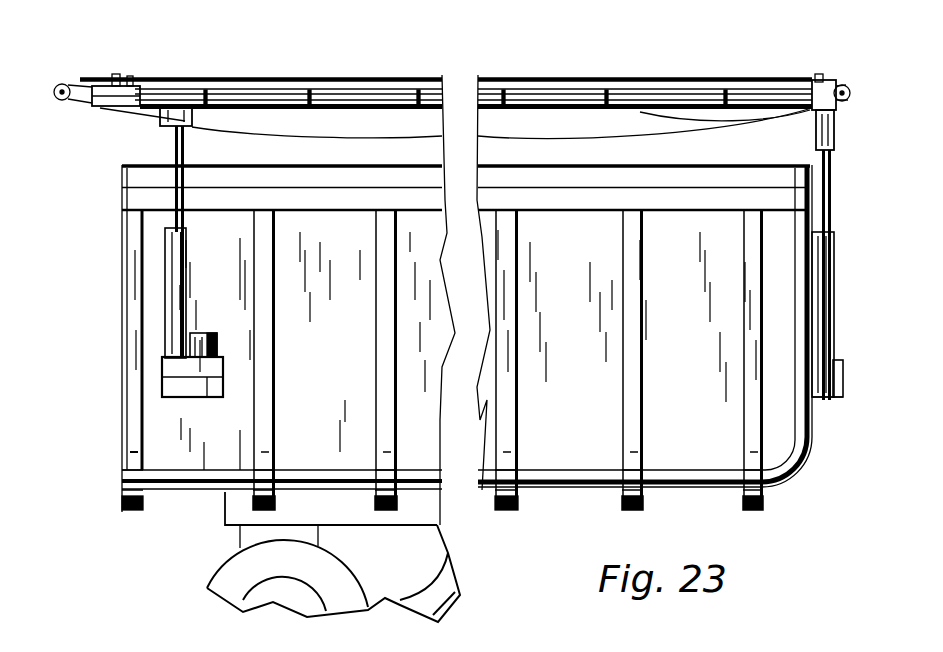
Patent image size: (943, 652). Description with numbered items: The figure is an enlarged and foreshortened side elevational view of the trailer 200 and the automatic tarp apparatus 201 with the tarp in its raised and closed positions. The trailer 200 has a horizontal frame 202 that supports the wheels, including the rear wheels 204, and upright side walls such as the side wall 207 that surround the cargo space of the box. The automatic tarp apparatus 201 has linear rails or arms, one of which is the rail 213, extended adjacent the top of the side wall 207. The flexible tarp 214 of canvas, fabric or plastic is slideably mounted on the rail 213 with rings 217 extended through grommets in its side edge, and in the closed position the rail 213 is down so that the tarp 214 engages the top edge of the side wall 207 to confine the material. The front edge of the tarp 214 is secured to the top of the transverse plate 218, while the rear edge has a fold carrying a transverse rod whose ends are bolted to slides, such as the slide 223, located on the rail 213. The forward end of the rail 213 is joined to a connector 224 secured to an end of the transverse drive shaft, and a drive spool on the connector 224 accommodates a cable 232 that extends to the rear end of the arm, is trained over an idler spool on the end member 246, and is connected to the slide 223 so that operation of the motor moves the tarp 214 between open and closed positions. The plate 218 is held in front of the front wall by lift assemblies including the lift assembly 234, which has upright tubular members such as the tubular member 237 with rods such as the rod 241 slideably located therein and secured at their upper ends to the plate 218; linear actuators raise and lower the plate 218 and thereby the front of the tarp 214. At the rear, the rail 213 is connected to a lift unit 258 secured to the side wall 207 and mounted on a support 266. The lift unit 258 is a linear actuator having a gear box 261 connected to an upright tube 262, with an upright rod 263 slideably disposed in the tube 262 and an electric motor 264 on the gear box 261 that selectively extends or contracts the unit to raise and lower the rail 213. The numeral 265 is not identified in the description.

The trailer 200 is at (119, 356).
The automatic tarp apparatus 201 is at (745, 75).
The horizontal frame 202 is at (237, 508).
The rear wheels 204 is at (230, 587).
The side wall 207 is at (538, 462).
The rail 213 is at (340, 97).
The tarp 214 is at (582, 122).
The rings 217 is at (727, 78).
The transverse plate 218 is at (833, 122).
The slide 223 is at (98, 103).
The connector 224 is at (847, 88).
The cable 232 is at (180, 80).
The lift assembly 234 is at (845, 287).
The tubular member 237 is at (822, 342).
The rod 241 is at (831, 200).
The end member 246 is at (55, 90).
The lift unit 258 is at (160, 250).
The gear box 261 is at (199, 372).
The upright tube 262 is at (180, 298).
The upright rod 263 is at (176, 146).
The electric motor 264 is at (217, 338).
The clamp 265 is at (175, 110).
The support 266 is at (172, 383).